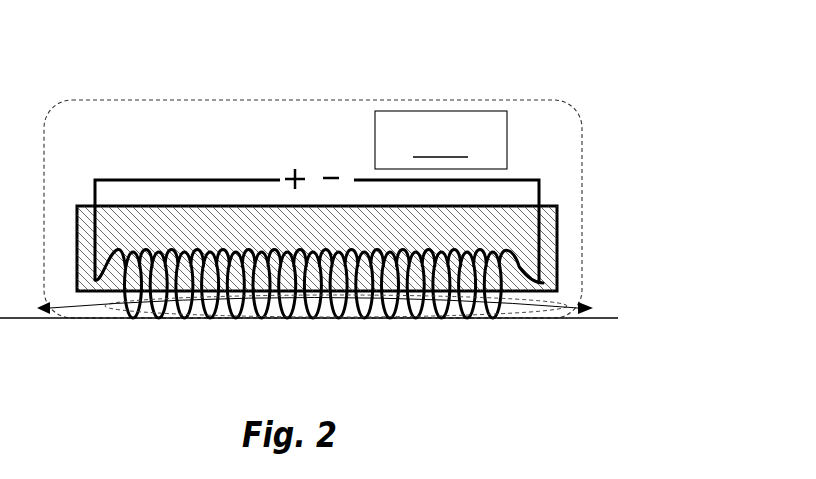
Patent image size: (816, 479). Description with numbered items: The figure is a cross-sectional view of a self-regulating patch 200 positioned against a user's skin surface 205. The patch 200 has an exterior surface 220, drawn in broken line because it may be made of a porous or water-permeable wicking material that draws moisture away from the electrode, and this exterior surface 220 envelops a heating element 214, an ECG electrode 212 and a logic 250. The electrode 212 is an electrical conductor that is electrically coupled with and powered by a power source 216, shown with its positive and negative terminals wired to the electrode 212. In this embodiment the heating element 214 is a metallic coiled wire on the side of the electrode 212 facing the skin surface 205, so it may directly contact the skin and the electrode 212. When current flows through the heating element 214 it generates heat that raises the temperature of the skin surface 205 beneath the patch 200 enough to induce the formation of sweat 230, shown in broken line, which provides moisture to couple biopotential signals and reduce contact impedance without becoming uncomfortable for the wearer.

The self-regulating patch 200 is at (292, 66).
The skin surface 205 is at (588, 318).
The electrode 212 is at (558, 218).
The heating element 214 is at (548, 255).
The power source 216 is at (332, 168).
The exterior surface 220 is at (445, 98).
The sweat 230 is at (257, 307).
The logic 250 is at (441, 140).